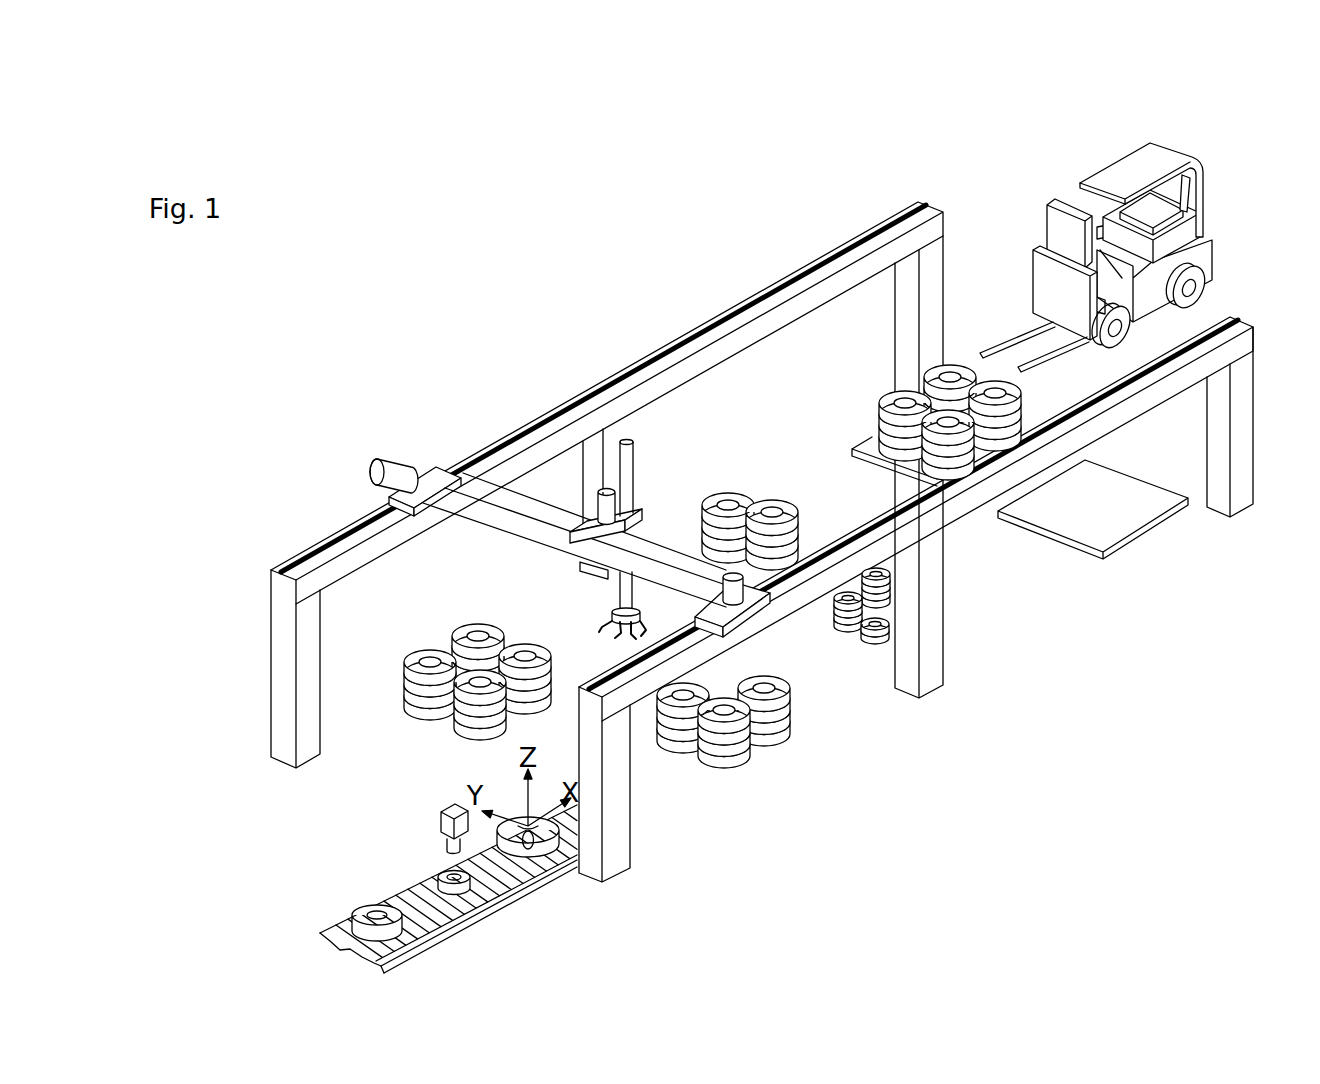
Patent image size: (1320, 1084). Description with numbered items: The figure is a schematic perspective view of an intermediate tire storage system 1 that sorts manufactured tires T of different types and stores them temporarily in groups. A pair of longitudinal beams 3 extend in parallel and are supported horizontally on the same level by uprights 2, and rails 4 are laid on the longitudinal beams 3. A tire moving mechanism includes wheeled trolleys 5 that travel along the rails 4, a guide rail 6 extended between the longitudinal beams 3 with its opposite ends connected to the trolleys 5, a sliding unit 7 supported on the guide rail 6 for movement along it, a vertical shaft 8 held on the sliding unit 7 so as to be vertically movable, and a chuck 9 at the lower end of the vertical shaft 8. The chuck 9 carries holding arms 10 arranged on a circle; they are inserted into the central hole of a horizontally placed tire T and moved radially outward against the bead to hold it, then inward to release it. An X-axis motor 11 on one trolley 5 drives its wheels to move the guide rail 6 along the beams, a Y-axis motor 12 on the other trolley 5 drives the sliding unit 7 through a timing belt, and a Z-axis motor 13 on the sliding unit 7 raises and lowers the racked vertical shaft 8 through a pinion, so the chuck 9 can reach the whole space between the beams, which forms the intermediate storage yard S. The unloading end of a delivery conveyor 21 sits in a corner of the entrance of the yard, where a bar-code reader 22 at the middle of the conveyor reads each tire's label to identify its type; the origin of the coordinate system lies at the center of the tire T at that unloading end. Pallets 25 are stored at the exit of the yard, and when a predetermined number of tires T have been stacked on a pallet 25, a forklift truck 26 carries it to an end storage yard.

The intermediate tire storage system 1 is at (674, 317).
The uprights 2 is at (945, 290).
The longitudinal beams 3 is at (610, 373).
The rails 4 is at (748, 305).
The trolleys 5 is at (430, 462).
The guide rail 6 is at (650, 566).
The sliding unit 7 is at (582, 528).
The vertical shaft 8 is at (624, 482).
The chuck 9 is at (610, 615).
The holding arms 10 is at (642, 630).
The X-axis motor 11 is at (383, 458).
The Y-axis motor 12 is at (722, 588).
The Z-axis motor 13 is at (610, 508).
The delivery conveyor 21 is at (476, 906).
The bar-code reader 22 is at (441, 823).
The pallets 25 is at (868, 447).
The forklift truck 26 is at (1123, 135).
The tire T is at (885, 395).
The intermediate storage yard S is at (756, 411).